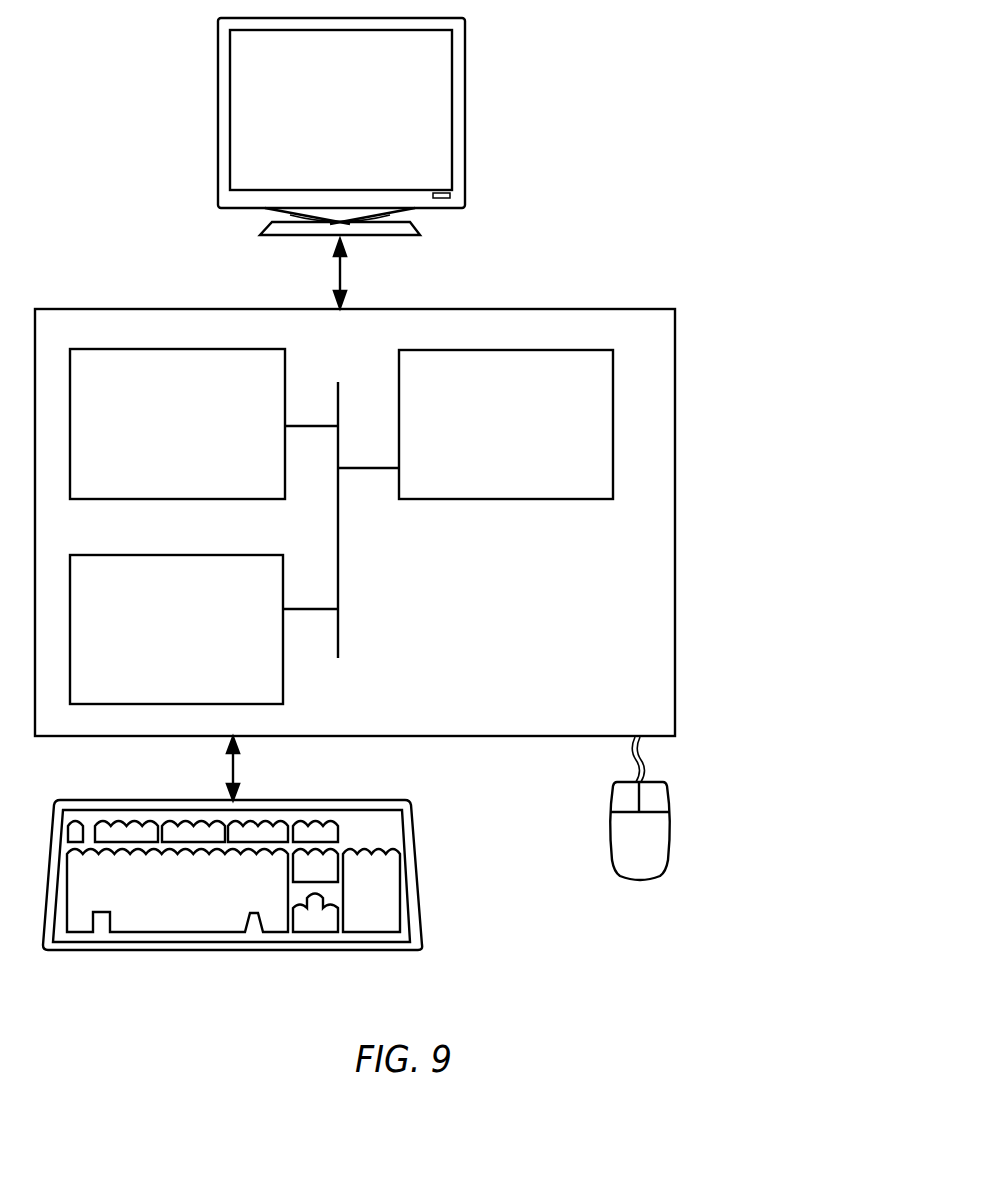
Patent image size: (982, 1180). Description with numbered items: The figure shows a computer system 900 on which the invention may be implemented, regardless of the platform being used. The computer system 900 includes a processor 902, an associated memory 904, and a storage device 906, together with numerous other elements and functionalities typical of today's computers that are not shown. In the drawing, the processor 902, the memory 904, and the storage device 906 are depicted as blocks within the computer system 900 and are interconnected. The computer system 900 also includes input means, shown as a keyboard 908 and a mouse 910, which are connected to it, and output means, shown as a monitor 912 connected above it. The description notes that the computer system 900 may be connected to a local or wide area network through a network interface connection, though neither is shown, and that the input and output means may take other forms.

The computer system 900 is at (733, 312).
The processor 902 is at (487, 422).
The memory 904 is at (157, 422).
The storage device 906 is at (157, 628).
The keyboard 908 is at (155, 888).
The mouse 910 is at (678, 891).
The monitor 912 is at (318, 121).